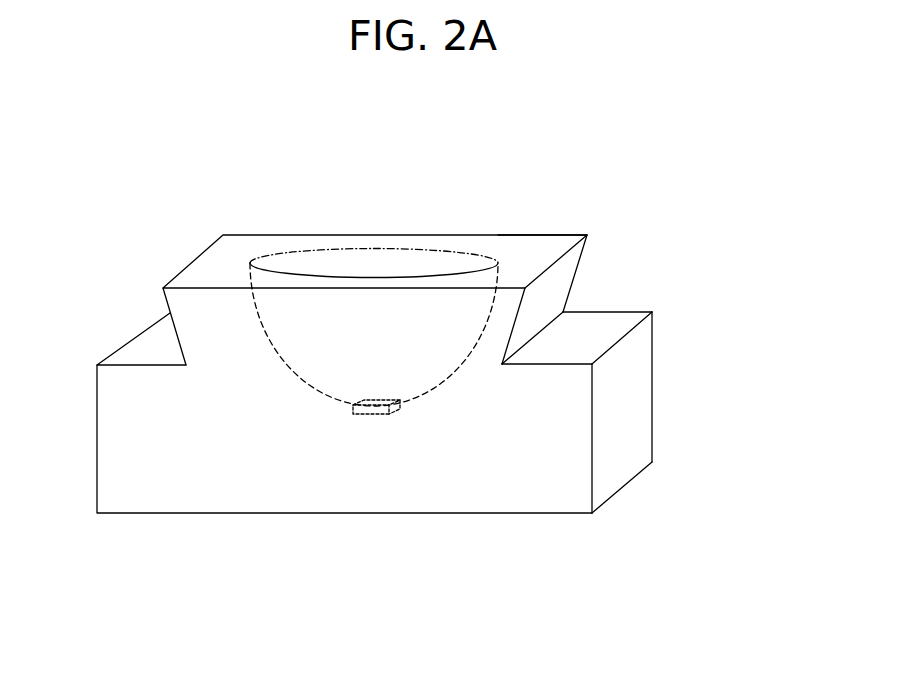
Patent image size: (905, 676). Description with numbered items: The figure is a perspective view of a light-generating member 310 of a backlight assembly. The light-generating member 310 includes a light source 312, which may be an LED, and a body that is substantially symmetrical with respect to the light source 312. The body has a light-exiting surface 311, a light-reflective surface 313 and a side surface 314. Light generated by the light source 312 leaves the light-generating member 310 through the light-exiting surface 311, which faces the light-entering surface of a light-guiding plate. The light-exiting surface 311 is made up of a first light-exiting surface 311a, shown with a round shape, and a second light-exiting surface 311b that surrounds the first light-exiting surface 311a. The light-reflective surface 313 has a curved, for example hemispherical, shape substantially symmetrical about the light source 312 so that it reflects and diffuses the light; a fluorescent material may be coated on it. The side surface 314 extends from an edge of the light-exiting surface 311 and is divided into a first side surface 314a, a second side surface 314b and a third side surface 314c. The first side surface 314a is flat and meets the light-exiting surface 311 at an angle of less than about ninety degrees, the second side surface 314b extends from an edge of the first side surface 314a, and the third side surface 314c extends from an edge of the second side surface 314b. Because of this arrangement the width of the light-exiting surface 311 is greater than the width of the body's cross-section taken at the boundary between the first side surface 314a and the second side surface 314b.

The light-generating member 310 is at (413, 113).
The light-exiting surface 311 is at (550, 185).
The first light-exiting surface 311a is at (423, 258).
The second light-exiting surface 311b is at (518, 256).
The light source 312 is at (365, 416).
The light-reflective surface 313 is at (248, 275).
The side surface 314 is at (747, 287).
The first side surface 314a is at (555, 290).
The second side surface 314b is at (630, 322).
The third side surface 314c is at (647, 346).